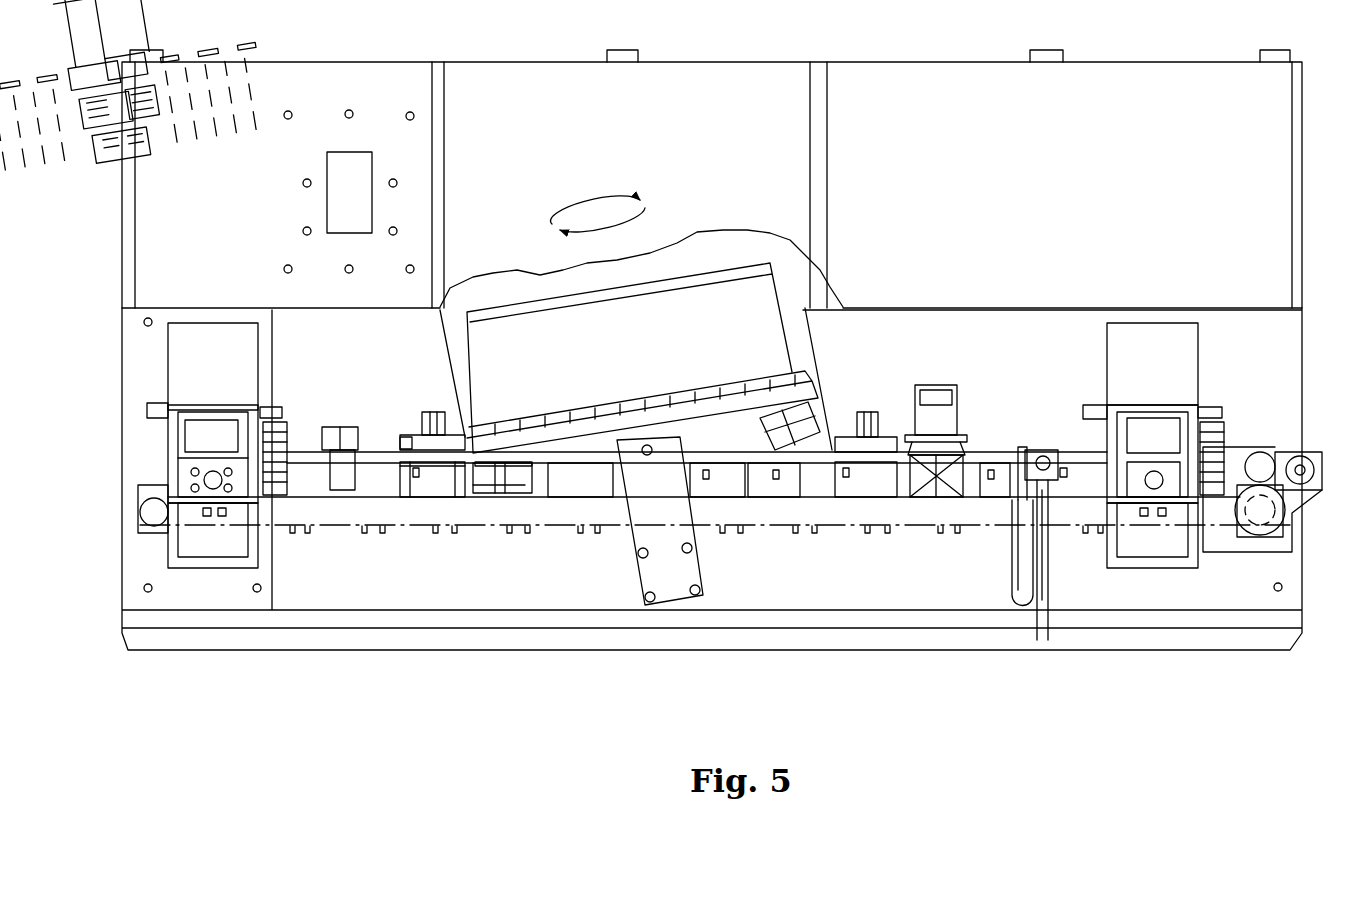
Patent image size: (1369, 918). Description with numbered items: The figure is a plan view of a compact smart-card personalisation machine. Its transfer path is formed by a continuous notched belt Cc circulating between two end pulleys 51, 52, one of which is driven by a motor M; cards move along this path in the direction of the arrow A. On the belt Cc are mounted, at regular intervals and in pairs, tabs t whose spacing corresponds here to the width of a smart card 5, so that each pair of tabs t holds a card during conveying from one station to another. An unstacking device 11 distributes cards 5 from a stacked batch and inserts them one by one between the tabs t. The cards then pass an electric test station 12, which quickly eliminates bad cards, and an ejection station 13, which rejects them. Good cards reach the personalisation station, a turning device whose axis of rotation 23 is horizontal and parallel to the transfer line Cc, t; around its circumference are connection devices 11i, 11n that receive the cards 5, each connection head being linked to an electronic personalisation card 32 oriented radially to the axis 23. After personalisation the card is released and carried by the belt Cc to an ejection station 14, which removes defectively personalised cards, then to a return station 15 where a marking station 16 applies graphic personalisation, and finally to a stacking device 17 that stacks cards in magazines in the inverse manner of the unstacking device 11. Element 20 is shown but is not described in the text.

The smart card 5 is at (715, 525).
The unstacking device 11 is at (158, 442).
The connection device 11i is at (521, 483).
The connection device 11n is at (813, 465).
The electric test station 12 is at (355, 396).
The ejection station 13 is at (438, 396).
The ejection station 14 is at (872, 385).
The return station 15 is at (945, 355).
The marking station 16 is at (1045, 421).
The stacking device 17 is at (1182, 382).
The swivel arm 20 is at (600, 440).
The axis of rotation 23 is at (603, 270).
The electronic personalisation card 32 is at (760, 272).
The end pulley 51 is at (150, 512).
The end pulley 52 is at (1272, 517).
The motor M is at (1303, 470).
The arrow A is at (737, 508).
The notched belt Cc is at (836, 532).
The tabs t is at (942, 525).